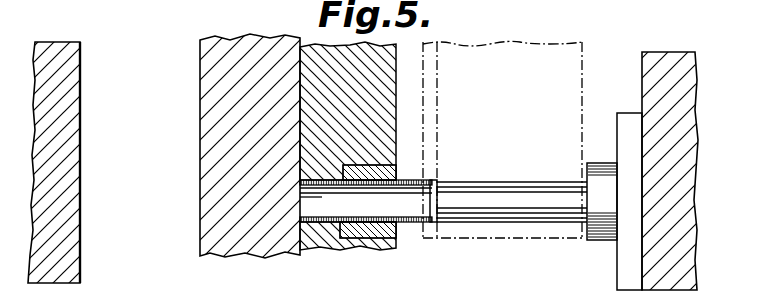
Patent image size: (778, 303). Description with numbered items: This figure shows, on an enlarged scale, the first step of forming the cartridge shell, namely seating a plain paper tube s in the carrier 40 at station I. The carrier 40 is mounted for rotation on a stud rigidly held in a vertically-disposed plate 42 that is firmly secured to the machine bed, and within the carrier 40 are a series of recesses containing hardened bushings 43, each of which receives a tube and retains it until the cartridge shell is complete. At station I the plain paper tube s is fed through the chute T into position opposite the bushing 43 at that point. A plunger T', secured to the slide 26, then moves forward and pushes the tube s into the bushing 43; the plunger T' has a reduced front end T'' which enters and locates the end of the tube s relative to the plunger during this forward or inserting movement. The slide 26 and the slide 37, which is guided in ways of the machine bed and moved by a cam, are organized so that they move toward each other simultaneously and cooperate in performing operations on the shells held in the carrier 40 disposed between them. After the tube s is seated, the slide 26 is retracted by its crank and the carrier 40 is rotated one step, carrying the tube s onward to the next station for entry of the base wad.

The slide 37 is at (73, 172).
The station I is at (132, 106).
The vertically-disposed plate 42 is at (200, 225).
The carrier 40 is at (320, 238).
The hardened bushing 43 is at (364, 243).
The reduced front end T'' is at (393, 179).
The plunger T' is at (527, 227).
The plain paper tube s is at (409, 228).
The chute T is at (502, 123).
The slide 26 is at (645, 75).